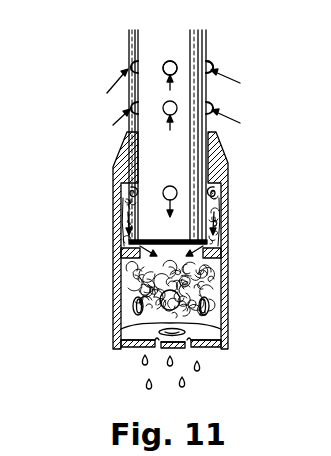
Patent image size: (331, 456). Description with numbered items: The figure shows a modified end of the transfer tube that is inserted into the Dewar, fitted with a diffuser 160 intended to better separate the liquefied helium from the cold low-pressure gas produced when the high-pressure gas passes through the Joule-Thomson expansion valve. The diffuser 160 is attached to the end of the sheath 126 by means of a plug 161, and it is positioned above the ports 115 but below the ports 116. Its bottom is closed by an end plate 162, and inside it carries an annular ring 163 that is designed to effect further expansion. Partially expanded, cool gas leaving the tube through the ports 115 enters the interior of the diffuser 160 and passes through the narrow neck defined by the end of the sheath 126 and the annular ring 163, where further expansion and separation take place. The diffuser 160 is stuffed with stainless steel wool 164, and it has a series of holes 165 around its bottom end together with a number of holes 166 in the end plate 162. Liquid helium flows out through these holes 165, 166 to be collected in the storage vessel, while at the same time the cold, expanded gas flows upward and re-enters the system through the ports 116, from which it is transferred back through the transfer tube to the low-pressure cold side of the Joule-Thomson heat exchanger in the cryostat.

The ports 115 is at (219, 191).
The ports 116 is at (211, 62).
The sheath 126 is at (176, 159).
The diffuser 160 is at (225, 236).
The plug 161 is at (127, 153).
The end plate 162 is at (121, 345).
The annular ring 163 is at (212, 260).
The stainless steel wool 164 is at (133, 274).
The holes 165 is at (207, 308).
The holes 166 is at (196, 348).